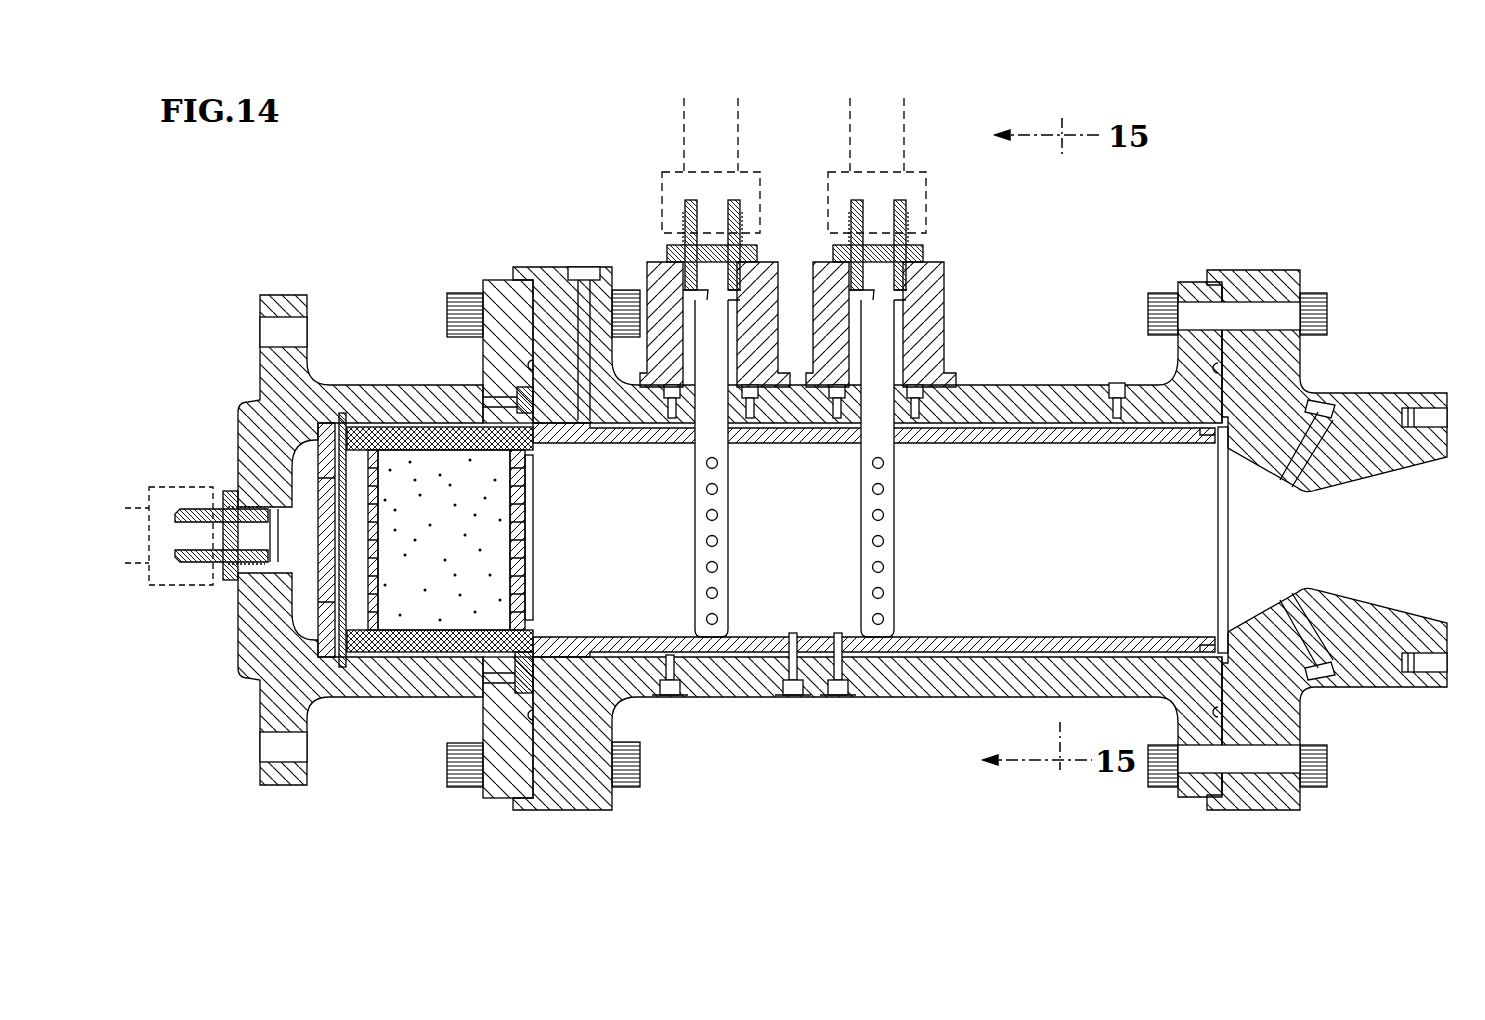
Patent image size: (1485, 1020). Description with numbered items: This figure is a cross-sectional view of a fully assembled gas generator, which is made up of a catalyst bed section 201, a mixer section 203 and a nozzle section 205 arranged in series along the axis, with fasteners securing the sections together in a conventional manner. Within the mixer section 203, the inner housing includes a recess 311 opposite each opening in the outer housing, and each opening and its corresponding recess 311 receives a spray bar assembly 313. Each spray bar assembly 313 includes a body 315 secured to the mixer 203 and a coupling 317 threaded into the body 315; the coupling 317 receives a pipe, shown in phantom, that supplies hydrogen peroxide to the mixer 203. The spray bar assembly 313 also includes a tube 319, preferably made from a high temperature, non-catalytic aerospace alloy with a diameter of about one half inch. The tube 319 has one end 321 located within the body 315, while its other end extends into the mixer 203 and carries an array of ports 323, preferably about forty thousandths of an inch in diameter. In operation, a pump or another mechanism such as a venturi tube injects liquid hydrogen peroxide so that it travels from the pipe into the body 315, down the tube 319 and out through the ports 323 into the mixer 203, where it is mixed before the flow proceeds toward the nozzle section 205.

The catalyst bed section 201 is at (352, 292).
The mixer section 203 is at (1035, 372).
The nozzle section 205 is at (1358, 300).
The recess 311 is at (893, 626).
The spray bar assembly 313 is at (908, 312).
The body 315 is at (933, 262).
The coupling 317 is at (905, 203).
The tube 319 is at (861, 593).
The end of the tube 321 is at (850, 308).
The ports 323 is at (874, 540).